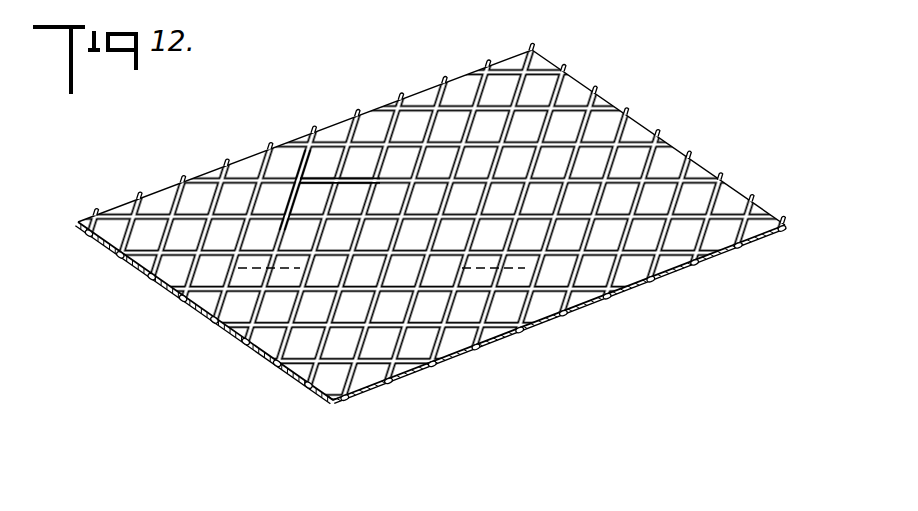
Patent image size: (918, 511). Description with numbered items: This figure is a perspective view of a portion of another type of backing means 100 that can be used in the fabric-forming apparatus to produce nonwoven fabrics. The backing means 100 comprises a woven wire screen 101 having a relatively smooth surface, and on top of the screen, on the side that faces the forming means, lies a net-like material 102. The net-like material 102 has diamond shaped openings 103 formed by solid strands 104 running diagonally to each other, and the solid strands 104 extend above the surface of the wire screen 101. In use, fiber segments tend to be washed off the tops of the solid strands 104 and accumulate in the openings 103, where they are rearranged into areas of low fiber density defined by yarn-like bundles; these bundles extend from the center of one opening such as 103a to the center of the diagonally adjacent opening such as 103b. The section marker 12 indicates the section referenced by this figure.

The backing means 100 is at (545, 60).
The woven wire screen 101 is at (424, 367).
The net-like material 102 is at (343, 378).
The diamond shaped openings 103 is at (247, 342).
The opening 103a is at (307, 194).
The diagonally adjacent opening 103b is at (330, 157).
The solid strands 104 is at (194, 283).
The section line indicator 12 is at (273, 268).